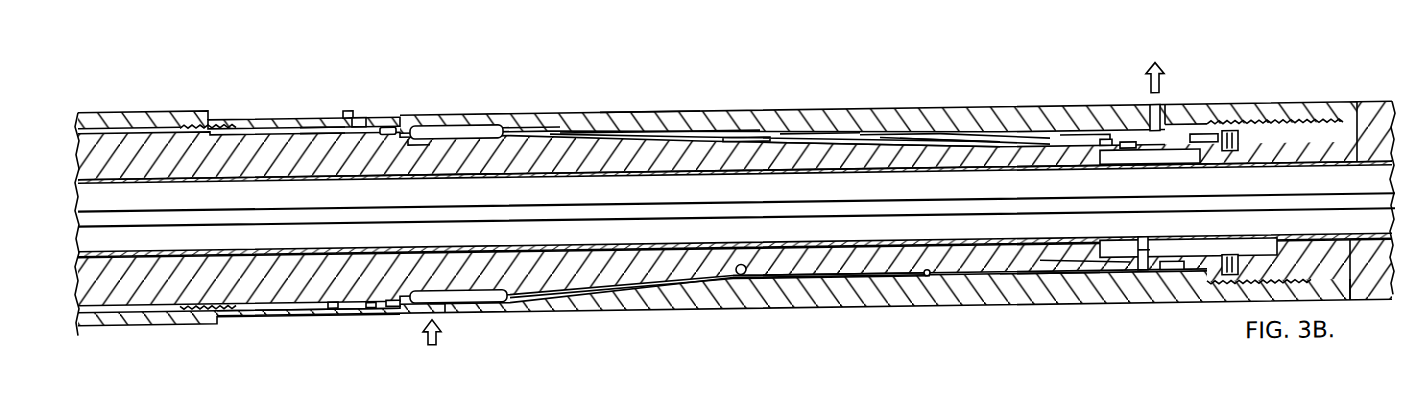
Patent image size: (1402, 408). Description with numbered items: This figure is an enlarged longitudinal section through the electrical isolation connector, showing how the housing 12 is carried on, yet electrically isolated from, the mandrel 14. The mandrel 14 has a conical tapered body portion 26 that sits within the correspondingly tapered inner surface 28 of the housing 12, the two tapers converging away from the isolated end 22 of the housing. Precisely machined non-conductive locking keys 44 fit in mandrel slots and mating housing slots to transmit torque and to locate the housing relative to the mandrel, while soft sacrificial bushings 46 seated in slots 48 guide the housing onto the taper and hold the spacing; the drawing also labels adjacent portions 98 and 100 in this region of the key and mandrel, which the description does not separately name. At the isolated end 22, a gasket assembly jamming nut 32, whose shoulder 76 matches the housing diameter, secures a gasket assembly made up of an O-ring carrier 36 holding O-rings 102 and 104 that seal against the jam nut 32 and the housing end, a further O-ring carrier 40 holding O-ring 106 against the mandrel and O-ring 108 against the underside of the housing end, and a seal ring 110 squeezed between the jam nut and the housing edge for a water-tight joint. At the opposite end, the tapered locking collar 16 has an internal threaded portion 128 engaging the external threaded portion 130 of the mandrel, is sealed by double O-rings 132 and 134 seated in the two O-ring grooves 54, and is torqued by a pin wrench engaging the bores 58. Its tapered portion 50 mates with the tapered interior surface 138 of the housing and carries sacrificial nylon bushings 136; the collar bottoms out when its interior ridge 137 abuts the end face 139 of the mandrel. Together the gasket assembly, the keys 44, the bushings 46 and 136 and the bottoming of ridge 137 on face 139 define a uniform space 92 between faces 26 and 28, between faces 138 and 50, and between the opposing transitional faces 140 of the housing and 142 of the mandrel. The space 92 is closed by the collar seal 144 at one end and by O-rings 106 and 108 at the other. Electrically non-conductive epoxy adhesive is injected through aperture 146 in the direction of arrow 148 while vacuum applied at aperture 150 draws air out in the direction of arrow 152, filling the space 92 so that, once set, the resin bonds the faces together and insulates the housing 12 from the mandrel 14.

The housing 12 is at (815, 307).
The mandrel 14 is at (577, 266).
The tapered locking collar 16 is at (1050, 137).
The isolated end of the housing 22 is at (375, 298).
The conical tapered body portion 26 is at (630, 124).
The conically tapered inner surface 28 is at (678, 129).
The gasket assembly jamming nut 32 is at (198, 105).
The O-ring carrier 36 is at (330, 127).
The O-ring carrier 40 is at (388, 298).
The locking keys 44 is at (455, 125).
The sacrificial bushings 46 is at (740, 137).
The slots 48 is at (740, 275).
The tapered portion of the collar 50 is at (920, 140).
The O-ring grooves 54 is at (1090, 270).
The bores 58 is at (1240, 118).
The shoulder of the jam nut 76 is at (248, 112).
The space 92 is at (590, 133).
The shoulder 98 is at (507, 122).
The recess 100 is at (410, 140).
The O-ring 102 is at (355, 113).
The O-ring 104 is at (330, 300).
The O-ring 106 is at (402, 120).
The O-ring 108 is at (440, 342).
The seal ring 110 is at (345, 107).
The internal threaded portion 128 is at (1050, 275).
The external threaded portion 130 is at (1082, 150).
The O-ring 132 is at (1110, 151).
The O-ring 134 is at (1132, 154).
The sacrificial nylon bushings 136 is at (975, 142).
The interior ridge 137 is at (1152, 274).
The tapered interior surface 138 is at (928, 278).
The end face of the mandrel 139 is at (1140, 256).
The transitional face of the housing 140 is at (820, 136).
The transitional face of the mandrel 142 is at (865, 137).
The seal 144 is at (1187, 309).
The aperture 146 is at (440, 311).
The arrow 148 is at (438, 311).
The aperture 150 is at (1180, 137).
The arrow 152 is at (1158, 121).